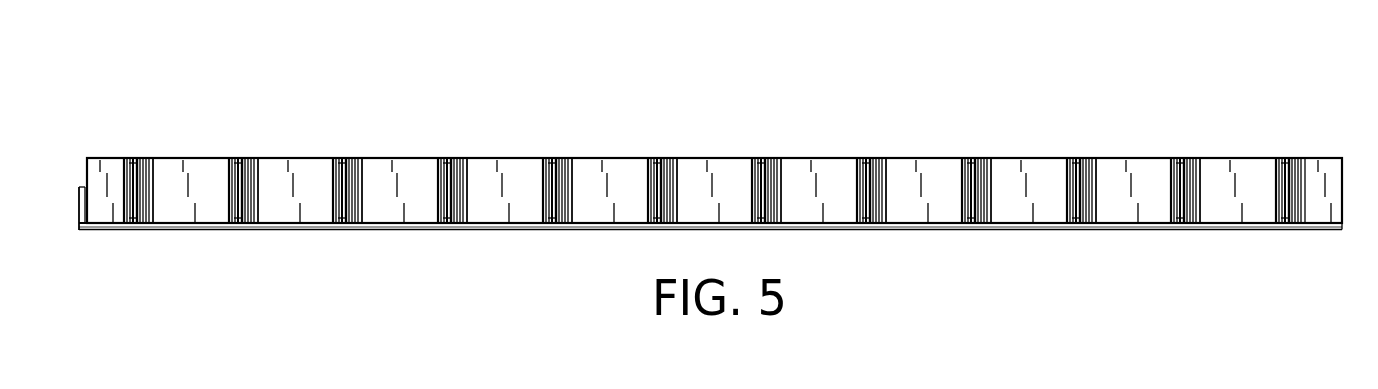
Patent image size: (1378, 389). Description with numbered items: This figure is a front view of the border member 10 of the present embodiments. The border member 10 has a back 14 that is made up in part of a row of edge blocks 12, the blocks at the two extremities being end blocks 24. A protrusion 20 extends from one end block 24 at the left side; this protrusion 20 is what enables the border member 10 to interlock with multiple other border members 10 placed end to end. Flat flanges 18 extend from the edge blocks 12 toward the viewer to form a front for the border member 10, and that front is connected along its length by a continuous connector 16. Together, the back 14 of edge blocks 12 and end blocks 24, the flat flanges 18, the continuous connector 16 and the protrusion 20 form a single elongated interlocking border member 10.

The border member 10 is at (716, 162).
The edge blocks 12 is at (905, 158).
The back 14 is at (452, 225).
The continuous connector 16 is at (343, 228).
The flat flanges 18 is at (248, 230).
The protrusion 20 is at (77, 217).
The end blocks 24 is at (97, 158).